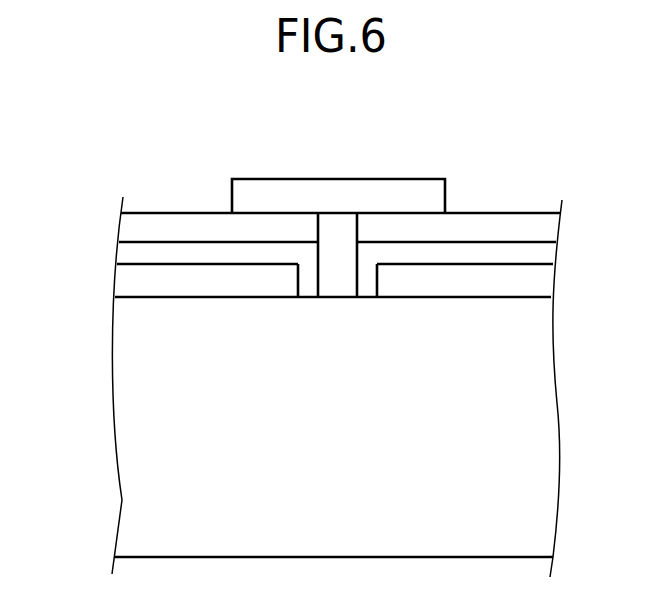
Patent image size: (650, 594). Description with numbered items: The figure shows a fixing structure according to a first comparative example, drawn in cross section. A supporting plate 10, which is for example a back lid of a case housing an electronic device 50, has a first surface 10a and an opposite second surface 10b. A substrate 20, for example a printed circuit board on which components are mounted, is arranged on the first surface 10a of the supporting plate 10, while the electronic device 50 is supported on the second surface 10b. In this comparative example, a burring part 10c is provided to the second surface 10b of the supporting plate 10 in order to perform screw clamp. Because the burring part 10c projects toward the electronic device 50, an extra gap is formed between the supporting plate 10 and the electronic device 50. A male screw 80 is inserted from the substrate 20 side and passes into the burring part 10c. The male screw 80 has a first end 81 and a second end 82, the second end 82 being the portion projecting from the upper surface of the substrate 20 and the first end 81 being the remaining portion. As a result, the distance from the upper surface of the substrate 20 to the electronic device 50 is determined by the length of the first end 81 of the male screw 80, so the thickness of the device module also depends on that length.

The supporting plate 10 is at (329, 286).
The first surface 10a is at (152, 242).
The second surface 10b is at (152, 264).
The burring part 10c is at (292, 278).
The substrate 20 is at (533, 229).
The electronic device 50 is at (533, 403).
The male screw 80 is at (402, 128).
The first end 81 is at (342, 275).
The second end 82 is at (338, 197).